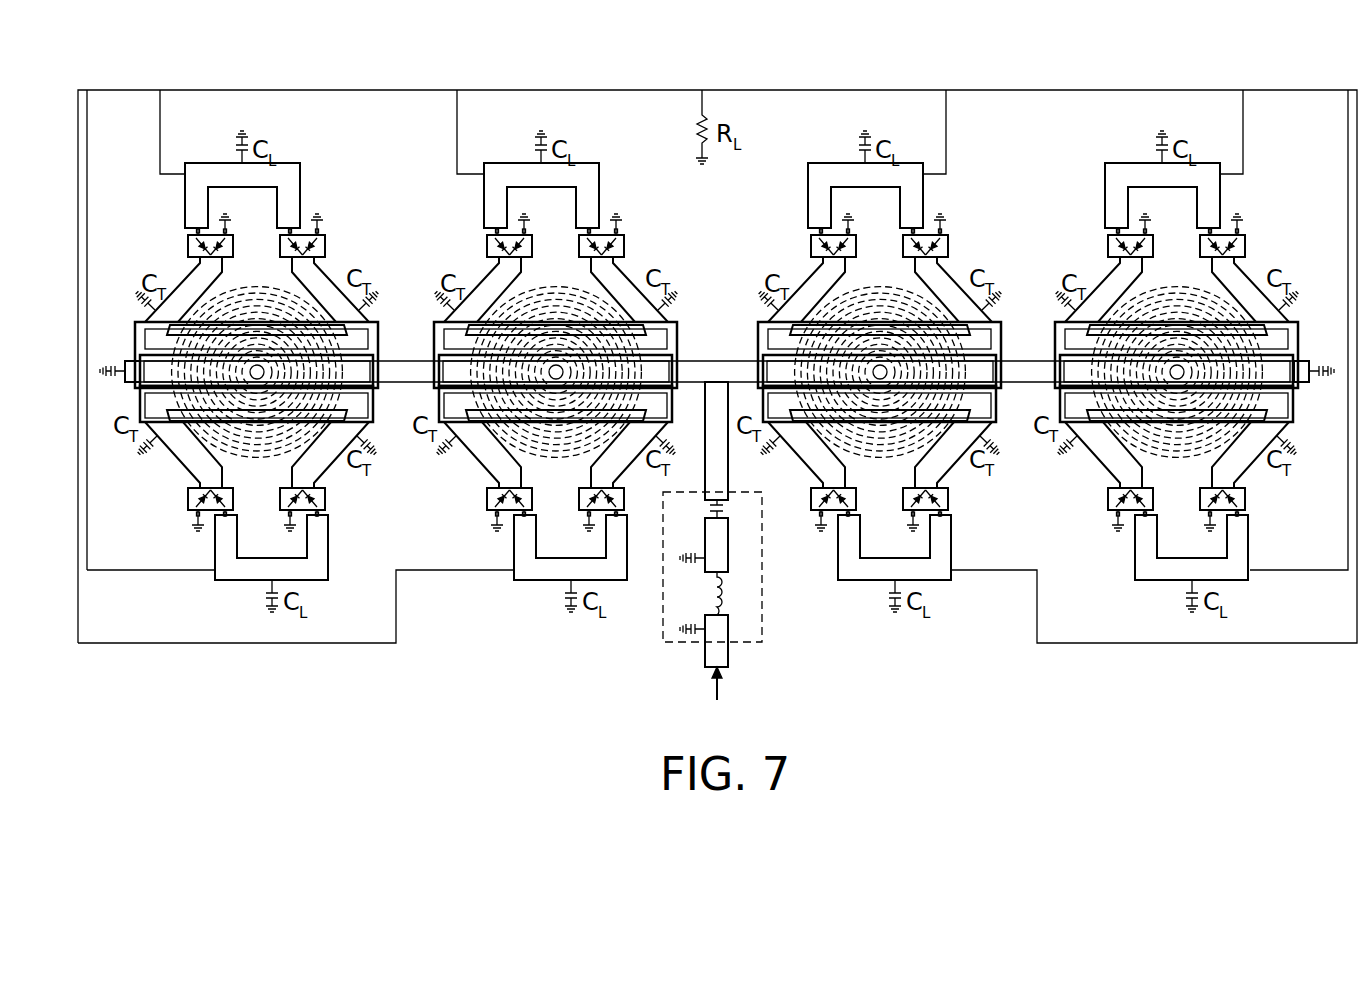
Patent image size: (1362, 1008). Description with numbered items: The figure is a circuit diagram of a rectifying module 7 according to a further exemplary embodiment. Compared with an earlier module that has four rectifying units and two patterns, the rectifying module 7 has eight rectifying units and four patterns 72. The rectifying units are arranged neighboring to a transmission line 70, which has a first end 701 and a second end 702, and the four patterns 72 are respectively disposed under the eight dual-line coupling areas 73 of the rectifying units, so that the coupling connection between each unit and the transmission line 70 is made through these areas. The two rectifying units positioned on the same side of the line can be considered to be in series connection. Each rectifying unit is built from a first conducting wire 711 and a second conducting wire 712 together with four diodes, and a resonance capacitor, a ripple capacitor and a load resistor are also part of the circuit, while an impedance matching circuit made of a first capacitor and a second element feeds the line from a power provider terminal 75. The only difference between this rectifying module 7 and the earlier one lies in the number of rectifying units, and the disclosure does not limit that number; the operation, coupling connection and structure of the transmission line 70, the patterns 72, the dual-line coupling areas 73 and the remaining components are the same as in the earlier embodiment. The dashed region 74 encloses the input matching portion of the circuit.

The rectifying module 7 is at (214, 60).
The transmission line 70 is at (717, 375).
The first end 701 is at (722, 472).
The second end 702 is at (1302, 366).
The first conducting wire 711 is at (237, 572).
The second conducting wire 712 is at (183, 447).
The pattern 72 is at (193, 302).
The dual-line coupling area 73 is at (1298, 402).
The input matching network 74 is at (662, 603).
The power provider terminal 75 is at (722, 653).